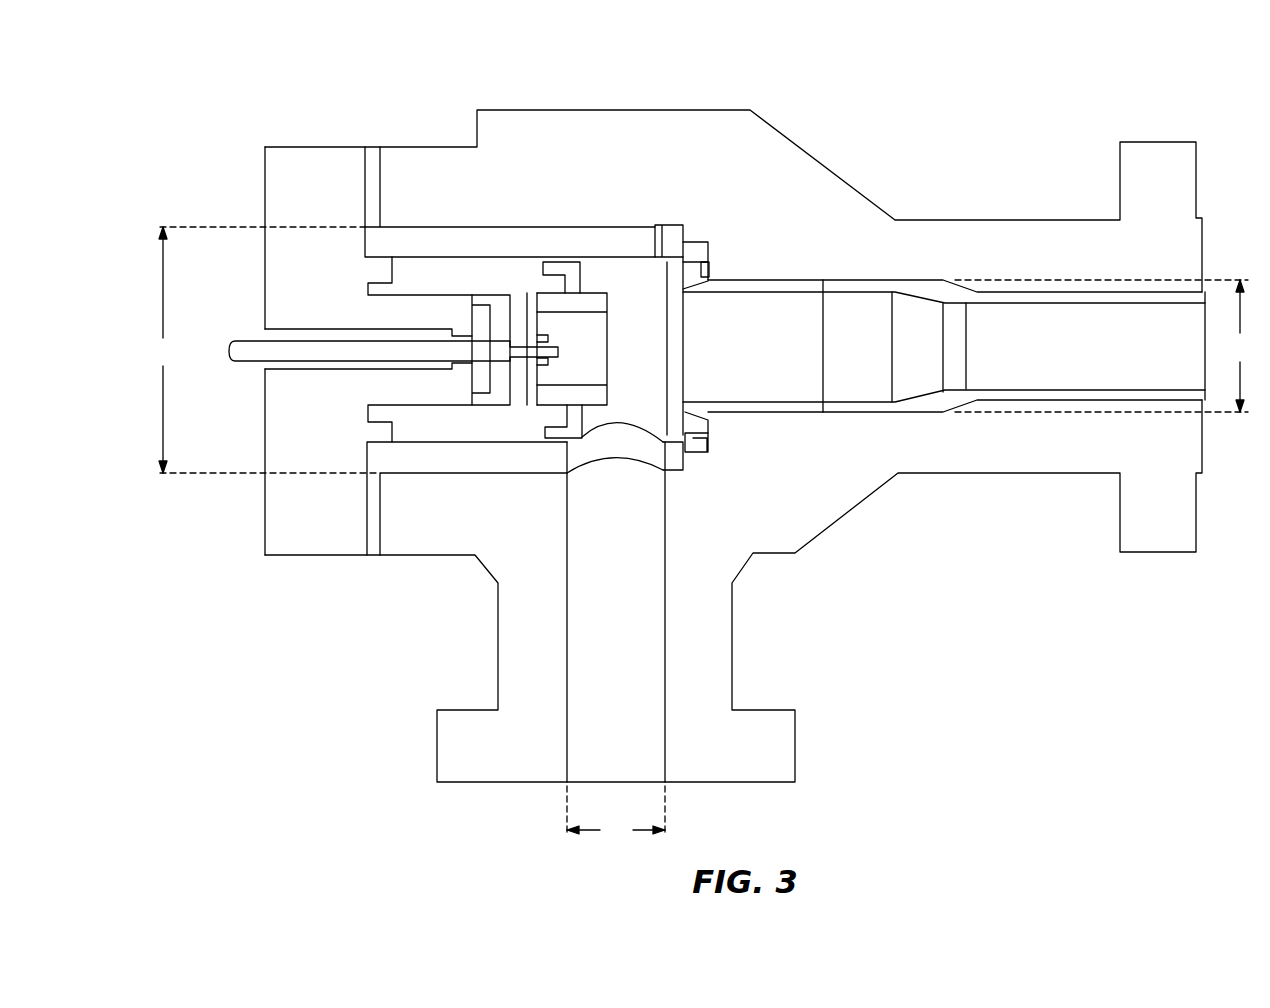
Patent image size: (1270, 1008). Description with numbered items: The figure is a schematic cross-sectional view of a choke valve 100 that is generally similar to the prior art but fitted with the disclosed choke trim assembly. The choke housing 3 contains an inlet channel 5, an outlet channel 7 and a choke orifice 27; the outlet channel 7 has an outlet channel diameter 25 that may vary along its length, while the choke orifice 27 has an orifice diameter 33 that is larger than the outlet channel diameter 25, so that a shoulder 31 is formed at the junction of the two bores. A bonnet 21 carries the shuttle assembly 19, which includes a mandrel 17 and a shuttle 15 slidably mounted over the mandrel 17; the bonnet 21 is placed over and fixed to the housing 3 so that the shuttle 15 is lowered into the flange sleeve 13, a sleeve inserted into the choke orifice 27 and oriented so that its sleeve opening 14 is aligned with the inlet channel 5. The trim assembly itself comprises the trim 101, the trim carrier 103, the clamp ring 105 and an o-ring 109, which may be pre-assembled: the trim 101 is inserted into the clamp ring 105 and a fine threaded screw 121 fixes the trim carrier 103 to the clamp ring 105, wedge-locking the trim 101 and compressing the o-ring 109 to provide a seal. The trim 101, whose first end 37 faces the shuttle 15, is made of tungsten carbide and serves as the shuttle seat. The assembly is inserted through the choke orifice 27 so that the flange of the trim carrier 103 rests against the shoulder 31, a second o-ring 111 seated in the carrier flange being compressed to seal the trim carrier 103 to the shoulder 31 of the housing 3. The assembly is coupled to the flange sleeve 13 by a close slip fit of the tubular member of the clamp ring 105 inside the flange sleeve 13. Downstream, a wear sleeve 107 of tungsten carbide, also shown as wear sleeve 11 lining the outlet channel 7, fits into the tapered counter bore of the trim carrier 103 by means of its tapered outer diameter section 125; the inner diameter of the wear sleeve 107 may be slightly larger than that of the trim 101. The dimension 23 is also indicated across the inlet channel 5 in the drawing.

The choke valve 100 is at (724, 402).
The choke housing 3 is at (640, 110).
The bonnet 21 is at (315, 160).
The flange sleeve 13 is at (427, 460).
The shuttle assembly 19 is at (475, 430).
The mandrel 17 is at (248, 338).
The shuttle 15 is at (558, 395).
The choke orifice 27 is at (593, 349).
The first end of the trim 37 is at (654, 225).
The sleeve opening 14 is at (623, 450).
The inlet channel 5 is at (616, 612).
The trim 101 is at (675, 415).
The clamp ring 105 is at (697, 234).
The trim carrier 103 is at (712, 243).
The second o-ring 111 is at (712, 265).
The outlet channel 7 is at (944, 346).
The tapered outer diameter section 125 is at (698, 407).
The shoulder 31 is at (710, 420).
The fine threaded screw 121 is at (710, 450).
The o-ring 109 is at (685, 463).
The wear sleeve 107 is at (806, 406).
The wear sleeve 11 is at (905, 410).
The outlet channel diameter 25 is at (1103, 346).
The orifice diameter 33 is at (265, 350).
The outlet bore diameter 23 is at (616, 814).